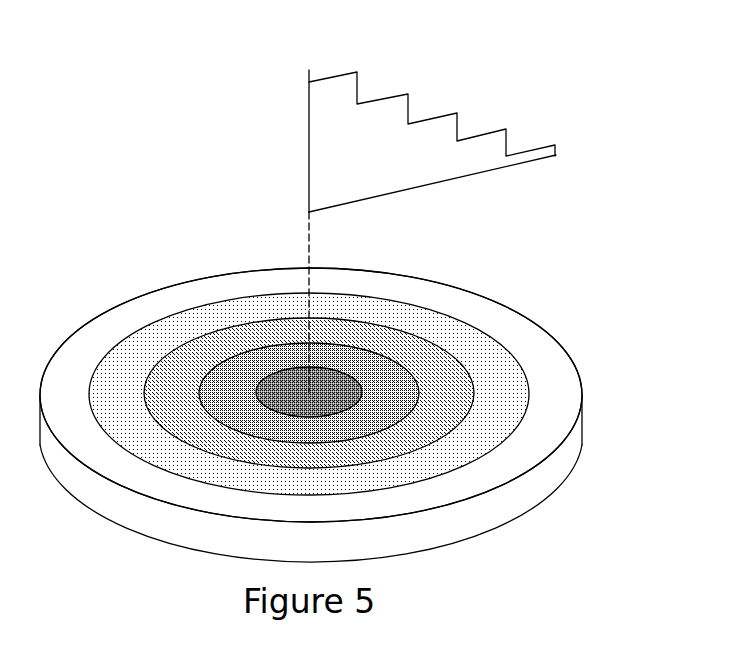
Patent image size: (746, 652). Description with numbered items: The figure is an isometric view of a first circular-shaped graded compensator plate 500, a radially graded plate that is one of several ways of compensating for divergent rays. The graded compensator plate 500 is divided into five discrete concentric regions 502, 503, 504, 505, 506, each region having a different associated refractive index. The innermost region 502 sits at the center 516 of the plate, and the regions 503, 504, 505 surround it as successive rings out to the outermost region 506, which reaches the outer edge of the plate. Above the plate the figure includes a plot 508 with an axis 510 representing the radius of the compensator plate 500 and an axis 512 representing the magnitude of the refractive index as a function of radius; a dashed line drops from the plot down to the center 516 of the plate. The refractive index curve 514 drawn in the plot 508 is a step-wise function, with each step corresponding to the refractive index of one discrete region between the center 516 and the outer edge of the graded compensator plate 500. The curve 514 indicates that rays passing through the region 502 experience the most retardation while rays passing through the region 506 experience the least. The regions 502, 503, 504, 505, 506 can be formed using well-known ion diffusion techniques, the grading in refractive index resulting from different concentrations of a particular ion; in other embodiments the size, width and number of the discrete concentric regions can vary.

The graded compensator plate 500 is at (94, 234).
The region 502 is at (325, 378).
The region 503 is at (377, 373).
The region 504 is at (442, 357).
The region 505 is at (497, 355).
The region 506 is at (560, 377).
The plot 508 is at (438, 118).
The axis 510 is at (558, 153).
The axis 512 is at (309, 72).
The curve n(r) 514 is at (459, 121).
The center 516 is at (307, 370).